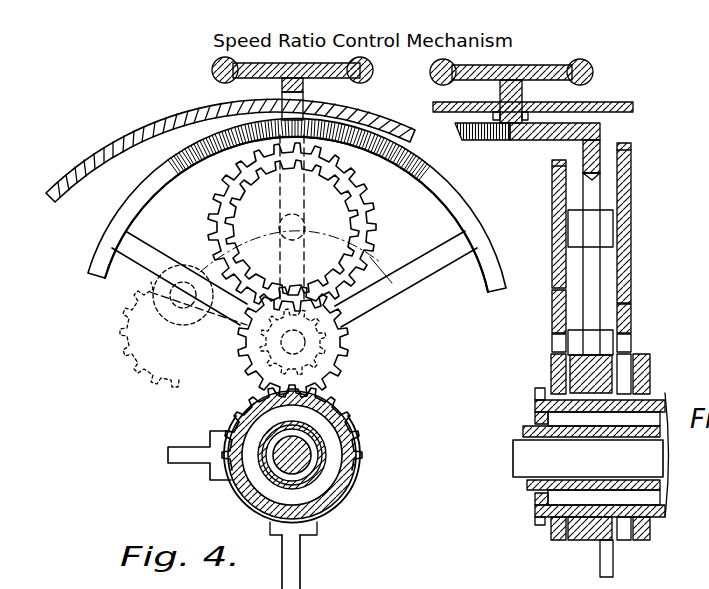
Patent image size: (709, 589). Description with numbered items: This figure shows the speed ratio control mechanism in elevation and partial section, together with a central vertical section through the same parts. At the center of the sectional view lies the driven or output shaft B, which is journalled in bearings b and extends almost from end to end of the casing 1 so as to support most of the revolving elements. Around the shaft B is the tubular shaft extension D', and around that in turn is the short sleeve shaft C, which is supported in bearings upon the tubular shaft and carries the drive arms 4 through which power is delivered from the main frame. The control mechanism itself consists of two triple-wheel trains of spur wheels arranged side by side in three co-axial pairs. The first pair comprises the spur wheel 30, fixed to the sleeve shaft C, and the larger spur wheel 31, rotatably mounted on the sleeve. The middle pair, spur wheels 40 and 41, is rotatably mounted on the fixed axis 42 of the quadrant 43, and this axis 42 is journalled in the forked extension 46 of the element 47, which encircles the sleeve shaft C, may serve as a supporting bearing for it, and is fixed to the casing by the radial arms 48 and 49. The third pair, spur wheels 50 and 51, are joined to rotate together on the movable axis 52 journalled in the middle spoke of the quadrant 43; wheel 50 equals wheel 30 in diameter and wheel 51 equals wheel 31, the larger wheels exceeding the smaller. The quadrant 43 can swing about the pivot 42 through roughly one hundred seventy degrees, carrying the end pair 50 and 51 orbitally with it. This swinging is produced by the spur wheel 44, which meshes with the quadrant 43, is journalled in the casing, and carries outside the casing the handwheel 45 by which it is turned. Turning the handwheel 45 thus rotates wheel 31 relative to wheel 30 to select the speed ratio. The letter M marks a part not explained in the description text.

In FIG. 4, the casing 1 is at (148, 131).
In FIG. 4A, the drive arms 4 is at (535, 393).
In FIG. 4, the spur wheel 30 is at (340, 417).
In FIG. 4A, the spur wheel 30 is at (553, 381).
In FIG. 4, the spur wheel 31 is at (227, 407).
In FIG. 4A, the spur wheel 31 is at (631, 374).
In FIG. 4, the spur wheel 40 is at (347, 357).
In FIG. 4A, the spur wheel 40 is at (553, 317).
In FIG. 4, the spur wheel 41 is at (237, 335).
In FIG. 4A, the spur wheel 41 is at (632, 324).
In FIG. 4, the fixed axis 42 is at (345, 330).
In FIG. 4A, the fixed axis 42 is at (552, 346).
In FIG. 4, the quadrant 43 is at (455, 202).
In FIG. 4A, the quadrant 43 is at (527, 151).
In FIG. 4, the spur wheel 44 is at (227, 110).
In FIG. 4A, the spur wheel 44 is at (533, 111).
In FIG. 4, the handwheel 45 is at (213, 67).
In FIG. 4A, the handwheel 45 is at (511, 91).
In FIG. 4A, the forked extension 46 is at (586, 368).
In FIG. 4, the supporting element 47 is at (233, 490).
In FIG. 4A, the supporting element 47 is at (604, 538).
In FIG. 4, the radial arm 48 is at (180, 450).
In FIG. 4, the radial arm 49 is at (292, 557).
In FIG. 4A, the radial arm 49 is at (605, 570).
In FIG. 4, the spur wheel 50 is at (232, 212).
In FIG. 4A, the spur wheel 50 is at (555, 272).
In FIG. 4, the spur wheel 51 is at (362, 215).
In FIG. 4A, the spur wheel 51 is at (631, 265).
In FIG. 4A, the movable axis 52 is at (561, 235).
In FIG. 4, the bearing b is at (320, 452).
In FIG. 4, the driven or output shaft B is at (323, 477).
In FIG. 4A, the driven or output shaft B is at (530, 463).
In FIG. 4, the sleeve shaft C is at (345, 490).
In FIG. 4A, the sleeve shaft C is at (535, 410).
In FIG. 4A, the tubular shaft extension D' is at (568, 458).
In FIG. 4A, the motor M is at (490, 580).